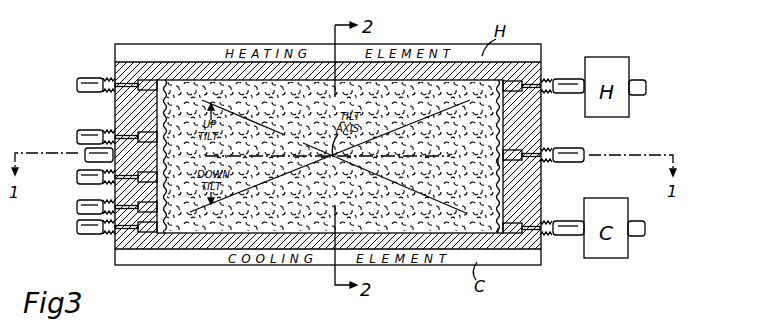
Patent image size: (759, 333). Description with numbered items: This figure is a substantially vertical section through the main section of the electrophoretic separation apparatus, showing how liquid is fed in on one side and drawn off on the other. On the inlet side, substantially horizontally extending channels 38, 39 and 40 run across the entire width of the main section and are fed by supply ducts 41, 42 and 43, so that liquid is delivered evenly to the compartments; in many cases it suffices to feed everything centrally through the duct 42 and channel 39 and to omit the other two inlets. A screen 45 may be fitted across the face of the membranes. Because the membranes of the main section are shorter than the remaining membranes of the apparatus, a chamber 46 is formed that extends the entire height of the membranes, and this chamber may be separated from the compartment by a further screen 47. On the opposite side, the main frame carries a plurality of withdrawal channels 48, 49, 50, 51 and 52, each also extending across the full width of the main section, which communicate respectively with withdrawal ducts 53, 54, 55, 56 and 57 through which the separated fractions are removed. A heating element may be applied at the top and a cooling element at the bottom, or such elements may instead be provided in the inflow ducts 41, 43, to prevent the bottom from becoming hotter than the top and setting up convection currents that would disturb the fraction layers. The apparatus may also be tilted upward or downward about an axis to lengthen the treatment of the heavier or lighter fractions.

The channel 38 is at (497, 100).
The channel 39 is at (498, 162).
The channel 40 is at (498, 232).
The supply duct 41 is at (568, 84).
The supply duct 42 is at (572, 133).
The supply duct 43 is at (568, 226).
The screen 45 is at (498, 136).
The chamber 46 is at (168, 89).
The further screen 47 is at (323, 156).
The withdrawal channel 48 is at (147, 80).
The withdrawal channel 49 is at (205, 163).
The withdrawal channel 50 is at (152, 178).
The withdrawal channel 51 is at (152, 208).
The withdrawal channel 52 is at (150, 233).
The withdrawal duct 53 is at (88, 80).
The withdrawal duct 54 is at (90, 132).
The withdrawal duct 55 is at (88, 175).
The withdrawal duct 56 is at (85, 208).
The withdrawal duct 57 is at (90, 233).